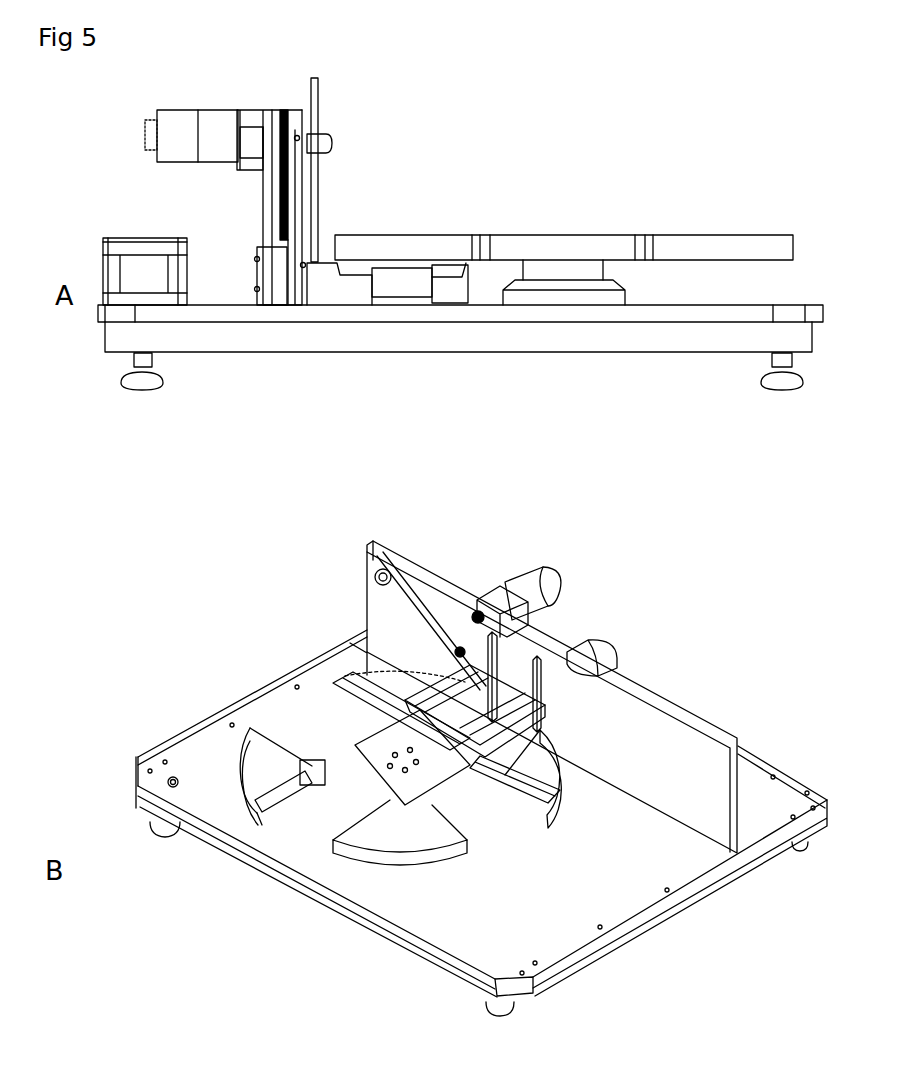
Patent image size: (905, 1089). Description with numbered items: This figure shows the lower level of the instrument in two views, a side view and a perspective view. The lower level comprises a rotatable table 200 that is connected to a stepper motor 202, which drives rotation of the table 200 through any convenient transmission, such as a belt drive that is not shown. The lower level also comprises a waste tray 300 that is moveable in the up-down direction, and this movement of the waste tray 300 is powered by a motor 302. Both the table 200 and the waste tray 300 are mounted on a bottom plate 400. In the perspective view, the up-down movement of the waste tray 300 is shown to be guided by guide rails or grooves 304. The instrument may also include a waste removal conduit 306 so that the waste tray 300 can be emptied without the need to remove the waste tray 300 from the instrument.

The rotatable table 200 is at (705, 232).
The stepper motor 202 is at (145, 235).
The waste tray 300 is at (342, 293).
The motor 302 is at (218, 108).
The guide rails or grooves 304 is at (540, 680).
The waste removal conduit 306 is at (402, 607).
The bottom plate 400 is at (652, 355).